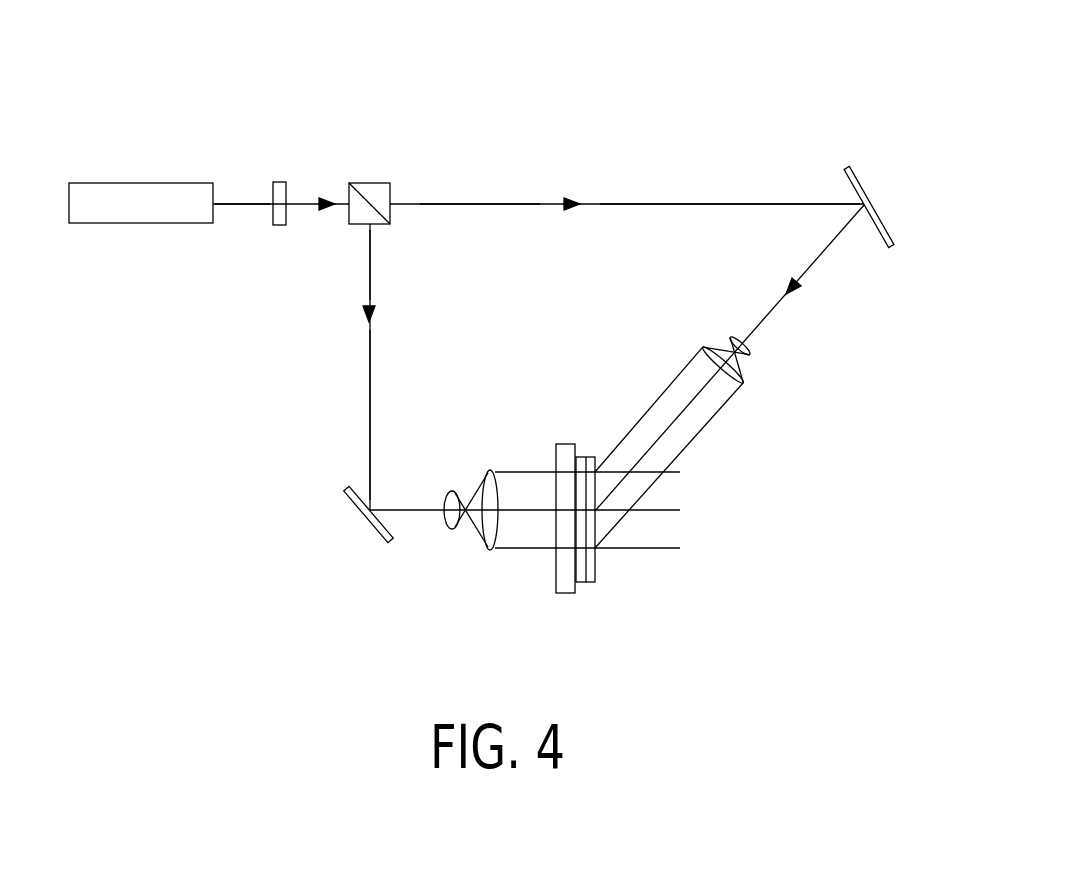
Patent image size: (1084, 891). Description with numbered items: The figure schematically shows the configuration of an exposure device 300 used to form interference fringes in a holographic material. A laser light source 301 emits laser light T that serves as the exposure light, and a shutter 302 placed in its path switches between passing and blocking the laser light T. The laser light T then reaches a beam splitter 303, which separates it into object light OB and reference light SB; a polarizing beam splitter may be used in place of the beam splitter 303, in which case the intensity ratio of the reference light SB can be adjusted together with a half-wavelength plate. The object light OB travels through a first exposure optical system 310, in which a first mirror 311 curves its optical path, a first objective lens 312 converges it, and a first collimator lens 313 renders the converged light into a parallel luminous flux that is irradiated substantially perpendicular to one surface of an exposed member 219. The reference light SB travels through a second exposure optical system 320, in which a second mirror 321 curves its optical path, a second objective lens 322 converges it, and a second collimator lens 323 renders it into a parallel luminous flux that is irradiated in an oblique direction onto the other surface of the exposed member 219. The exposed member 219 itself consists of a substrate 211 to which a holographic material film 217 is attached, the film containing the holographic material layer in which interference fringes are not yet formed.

The exposure device 300 is at (442, 84).
The laser light source 301 is at (120, 183).
The shutter 302 is at (279, 182).
The beam splitter 303 is at (370, 183).
The first exposure optical system 310 is at (342, 388).
The first mirror 311 is at (362, 513).
The first objective lens 312 is at (450, 491).
The first collimator lens 313 is at (489, 471).
The second exposure optical system 320 is at (586, 138).
The second mirror 321 is at (867, 190).
The second objective lens 322 is at (752, 347).
The second collimator lens 323 is at (747, 384).
The substrate 211 is at (565, 444).
The holographic material film 217 is at (594, 603).
The exposed member 219 is at (590, 400).
The laser light T is at (248, 203).
The reference light SB is at (480, 203).
The object light OB is at (369, 253).